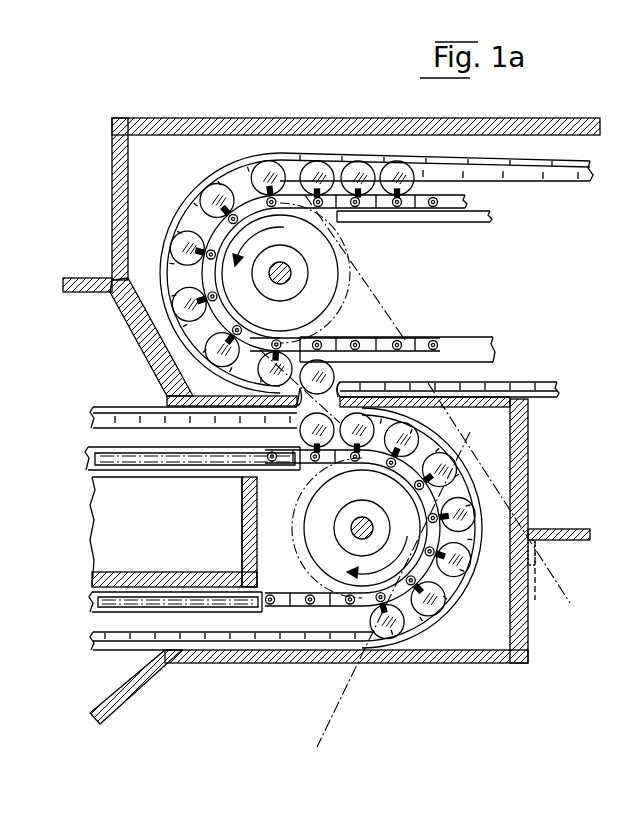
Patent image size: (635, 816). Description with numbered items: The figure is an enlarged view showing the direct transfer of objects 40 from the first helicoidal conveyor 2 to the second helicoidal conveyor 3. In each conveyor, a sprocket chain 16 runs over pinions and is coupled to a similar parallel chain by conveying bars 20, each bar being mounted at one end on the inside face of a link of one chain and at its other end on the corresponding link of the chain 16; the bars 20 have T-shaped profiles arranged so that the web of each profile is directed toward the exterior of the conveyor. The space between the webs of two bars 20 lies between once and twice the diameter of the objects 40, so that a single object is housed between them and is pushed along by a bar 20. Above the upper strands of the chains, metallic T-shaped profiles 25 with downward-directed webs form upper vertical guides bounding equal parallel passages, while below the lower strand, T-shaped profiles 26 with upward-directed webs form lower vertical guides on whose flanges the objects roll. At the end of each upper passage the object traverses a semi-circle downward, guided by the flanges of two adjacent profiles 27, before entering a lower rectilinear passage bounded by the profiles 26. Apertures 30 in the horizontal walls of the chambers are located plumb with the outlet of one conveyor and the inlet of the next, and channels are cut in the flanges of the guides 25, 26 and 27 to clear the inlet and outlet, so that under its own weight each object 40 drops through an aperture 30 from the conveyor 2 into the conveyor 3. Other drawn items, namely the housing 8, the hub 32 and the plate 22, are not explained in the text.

The housing wall 8 is at (264, 134).
The profiles 27 is at (182, 212).
The objects to be conveyed 40 is at (180, 245).
The turret hub 32 is at (321, 400).
The conveying bars 20 is at (415, 187).
The sprocket chain 16 is at (378, 214).
The first helicoidal conveyor 2 is at (468, 292).
The chain guide plate 22 is at (400, 337).
The apertures 30 is at (334, 377).
The longitudinal T-shaped profiles 26 is at (517, 390).
The longitudinal profiles 25 is at (130, 408).
The second helicoidal conveyor 3 is at (280, 541).